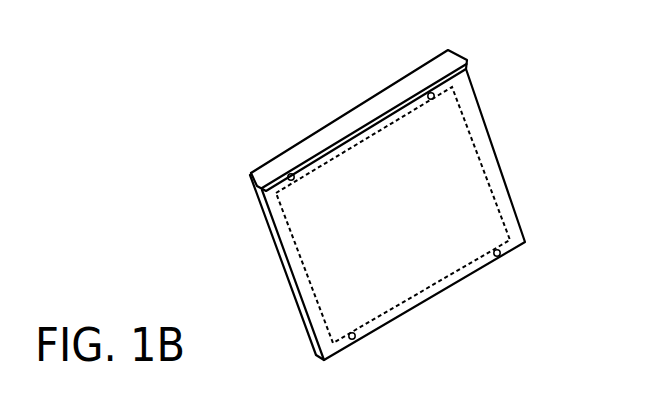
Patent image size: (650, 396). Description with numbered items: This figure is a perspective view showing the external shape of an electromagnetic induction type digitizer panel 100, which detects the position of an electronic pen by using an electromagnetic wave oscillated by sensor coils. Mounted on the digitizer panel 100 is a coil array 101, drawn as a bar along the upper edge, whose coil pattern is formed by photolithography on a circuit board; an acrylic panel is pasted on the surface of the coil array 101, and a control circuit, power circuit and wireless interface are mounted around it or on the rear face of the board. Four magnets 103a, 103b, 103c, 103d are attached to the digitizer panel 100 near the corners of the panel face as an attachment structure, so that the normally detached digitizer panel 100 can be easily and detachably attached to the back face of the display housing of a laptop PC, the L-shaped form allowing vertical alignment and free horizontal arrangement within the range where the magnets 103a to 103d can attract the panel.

The digitizer panel 100 is at (532, 111).
The coil array 101 is at (358, 141).
The magnet 103a is at (292, 180).
The magnet 103b is at (431, 99).
The magnet 103c is at (350, 333).
The magnet 103d is at (494, 251).